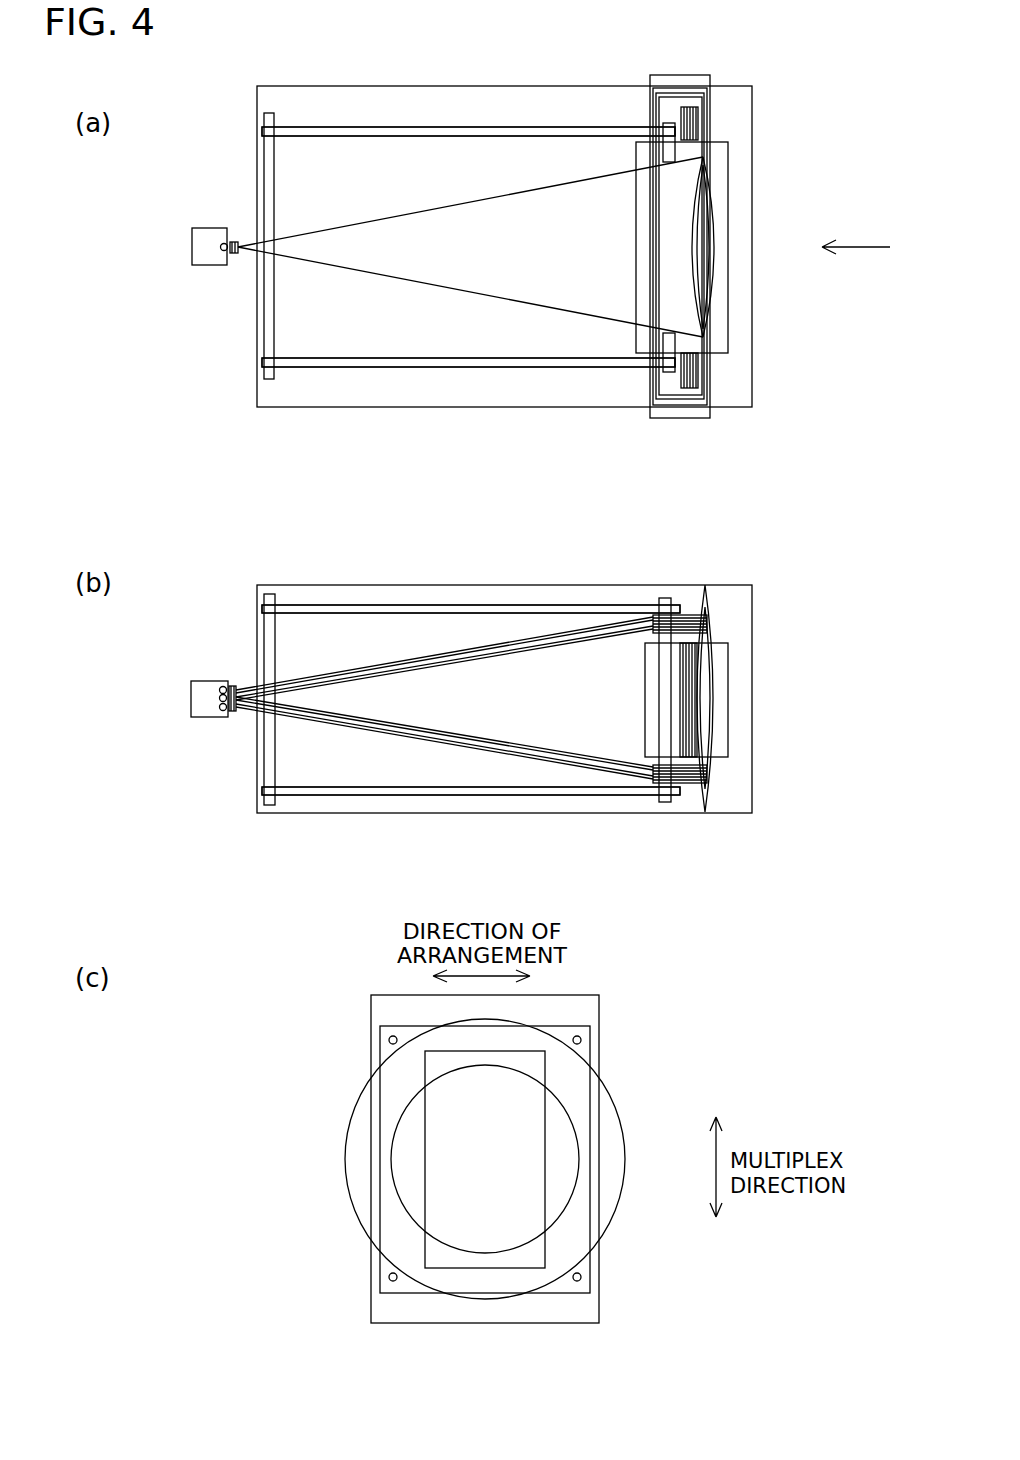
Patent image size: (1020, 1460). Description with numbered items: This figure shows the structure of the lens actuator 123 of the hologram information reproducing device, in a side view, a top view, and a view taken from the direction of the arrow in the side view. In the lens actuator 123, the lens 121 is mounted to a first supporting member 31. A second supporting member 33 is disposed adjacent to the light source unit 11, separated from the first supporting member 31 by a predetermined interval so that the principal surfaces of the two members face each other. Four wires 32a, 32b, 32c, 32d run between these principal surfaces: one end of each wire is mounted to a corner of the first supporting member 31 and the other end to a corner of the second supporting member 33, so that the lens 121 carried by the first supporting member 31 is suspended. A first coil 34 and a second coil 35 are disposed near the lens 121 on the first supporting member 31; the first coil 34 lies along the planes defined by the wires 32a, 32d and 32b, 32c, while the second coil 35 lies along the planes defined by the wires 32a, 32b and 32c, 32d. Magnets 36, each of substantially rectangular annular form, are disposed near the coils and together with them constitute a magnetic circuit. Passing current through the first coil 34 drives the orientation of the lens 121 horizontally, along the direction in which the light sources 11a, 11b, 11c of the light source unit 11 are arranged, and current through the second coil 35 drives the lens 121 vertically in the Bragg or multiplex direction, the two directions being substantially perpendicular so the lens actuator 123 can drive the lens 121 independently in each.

The light source unit 11 is at (208, 253).
The light source 11a is at (222, 688).
The light source 11b is at (220, 702).
The light source 11c is at (222, 712).
The first supporting member 31 is at (718, 159).
The wire 32a is at (453, 132).
The wire 32b is at (443, 790).
The wire 32c is at (352, 360).
The wire 32d is at (389, 1040).
The second supporting member 33 is at (265, 171).
The first coil 34 is at (693, 400).
The second coil 35 is at (692, 117).
The magnet 36 is at (670, 128).
The lens 121 is at (712, 262).
The lens actuator 123 is at (580, 117).